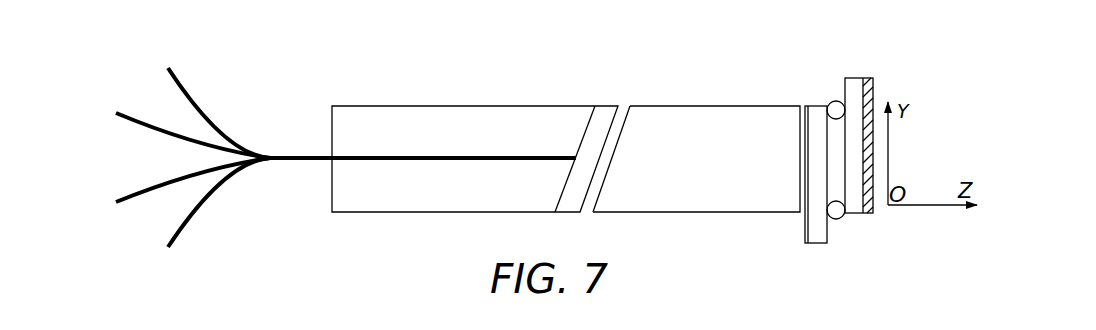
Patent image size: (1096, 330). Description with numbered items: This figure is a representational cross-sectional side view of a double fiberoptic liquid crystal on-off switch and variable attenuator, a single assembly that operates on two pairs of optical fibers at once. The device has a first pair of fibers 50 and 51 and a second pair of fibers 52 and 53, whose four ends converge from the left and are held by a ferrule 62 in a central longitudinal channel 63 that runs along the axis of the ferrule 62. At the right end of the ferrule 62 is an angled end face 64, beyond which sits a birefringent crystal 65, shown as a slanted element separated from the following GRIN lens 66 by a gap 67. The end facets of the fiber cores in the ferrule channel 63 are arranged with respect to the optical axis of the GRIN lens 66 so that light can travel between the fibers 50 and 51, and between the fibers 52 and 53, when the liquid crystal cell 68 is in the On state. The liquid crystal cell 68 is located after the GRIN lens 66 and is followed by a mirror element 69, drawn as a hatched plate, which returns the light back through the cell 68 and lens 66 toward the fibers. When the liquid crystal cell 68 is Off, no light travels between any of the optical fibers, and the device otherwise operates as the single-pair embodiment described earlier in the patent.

The optical fiber 50 is at (187, 136).
The optical fiber 51 is at (193, 197).
The optical fiber 52 is at (219, 110).
The optical fiber 53 is at (219, 202).
The ferrule 62 is at (463, 140).
The central longitudinal channel 63 is at (422, 180).
The angled end face 64 is at (587, 177).
The birefringent crystal 65 is at (575, 142).
The GRIN lens 66 is at (696, 142).
The gap 67 is at (608, 134).
The liquid crystal cell 68 is at (807, 130).
The mirror element 69 is at (886, 163).